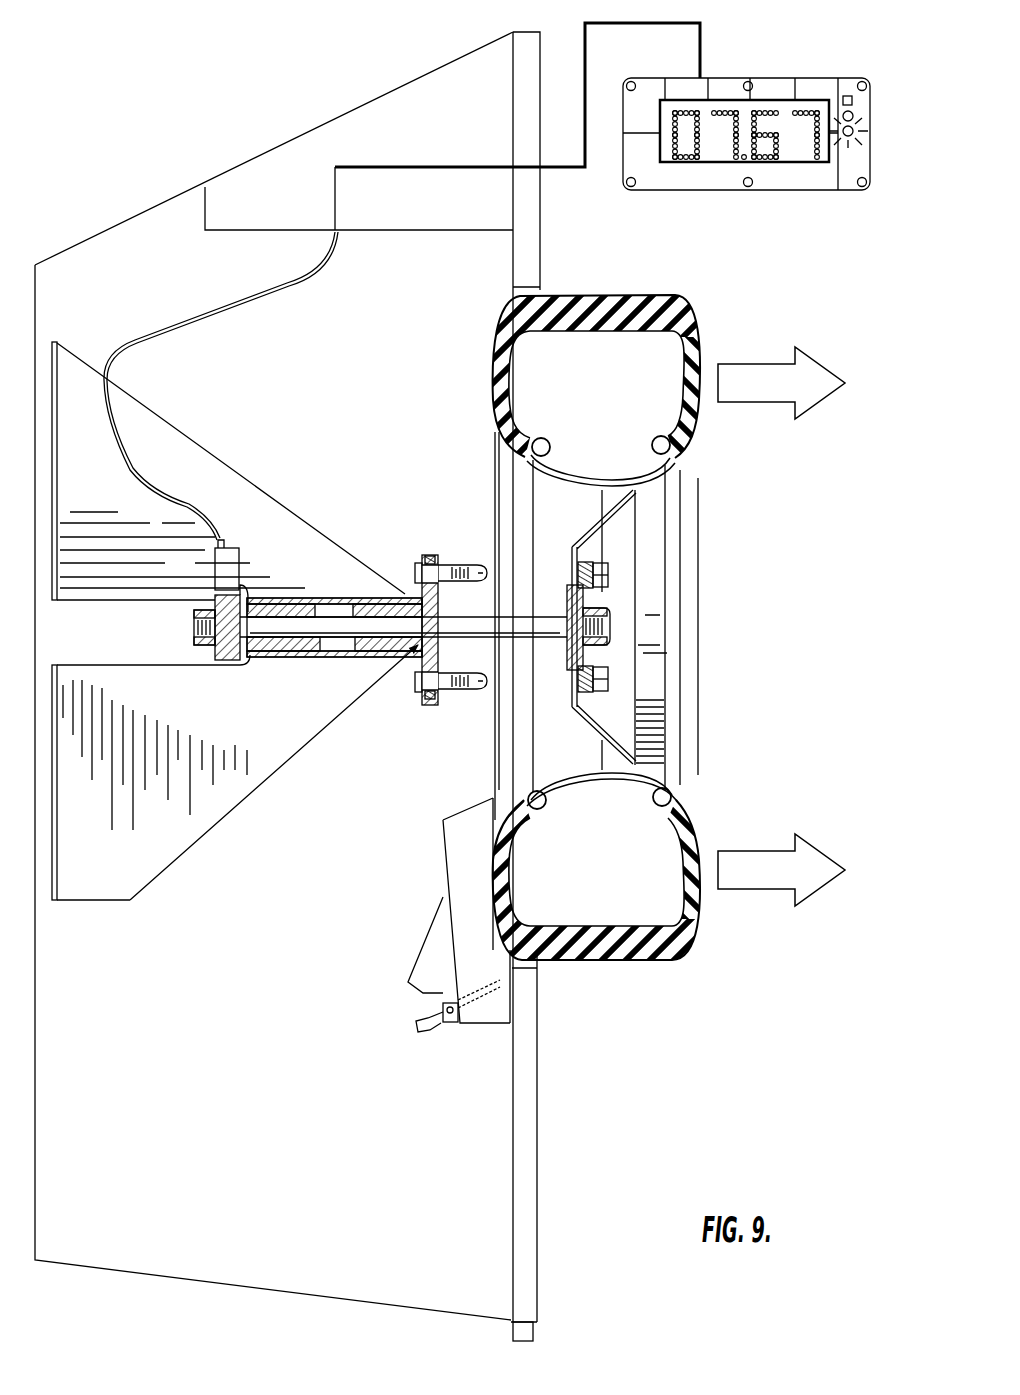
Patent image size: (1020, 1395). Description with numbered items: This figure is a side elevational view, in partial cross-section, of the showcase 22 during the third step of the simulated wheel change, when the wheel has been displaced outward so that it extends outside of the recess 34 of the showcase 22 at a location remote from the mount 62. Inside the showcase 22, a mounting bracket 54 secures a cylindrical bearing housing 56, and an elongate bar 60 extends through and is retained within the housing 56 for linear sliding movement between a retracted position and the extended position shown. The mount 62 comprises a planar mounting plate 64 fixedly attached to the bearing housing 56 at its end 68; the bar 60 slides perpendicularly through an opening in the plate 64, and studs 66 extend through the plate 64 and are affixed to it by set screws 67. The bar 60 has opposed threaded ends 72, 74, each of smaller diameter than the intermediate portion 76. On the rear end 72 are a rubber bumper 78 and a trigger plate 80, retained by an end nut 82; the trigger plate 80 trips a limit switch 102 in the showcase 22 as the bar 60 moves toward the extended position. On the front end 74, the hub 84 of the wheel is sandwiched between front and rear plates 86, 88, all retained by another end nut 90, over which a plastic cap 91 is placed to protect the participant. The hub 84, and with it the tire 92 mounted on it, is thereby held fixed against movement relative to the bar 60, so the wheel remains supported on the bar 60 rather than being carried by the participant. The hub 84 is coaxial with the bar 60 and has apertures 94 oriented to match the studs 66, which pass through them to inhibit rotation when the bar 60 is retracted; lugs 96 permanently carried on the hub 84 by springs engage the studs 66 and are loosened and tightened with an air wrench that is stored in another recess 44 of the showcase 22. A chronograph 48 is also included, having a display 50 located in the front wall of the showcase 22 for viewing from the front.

The showcase 22 is at (150, 160).
The recess 34 is at (545, 293).
The recess 44 is at (443, 872).
The chronograph 48 is at (773, 85).
The display 50 is at (703, 157).
The mounting bracket 54 is at (180, 470).
The cylindrical housing 56 is at (311, 658).
The elongate bar 60 is at (280, 627).
The mount 62 is at (407, 563).
The planar mounting plate 64 is at (440, 605).
The studs 66 is at (486, 568).
The set screws 67 is at (428, 555).
The end 68 is at (380, 658).
The rear threaded end 72 is at (193, 630).
The front threaded end 74 is at (613, 628).
The portion 76 is at (347, 625).
The rubber bumper 78 is at (270, 598).
The trigger plate 80 is at (232, 660).
The end nut 82 is at (200, 610).
The hub 84 is at (617, 507).
The front plate 86 is at (583, 600).
The rear plate 88 is at (593, 653).
The end nut 90 is at (586, 645).
The plastic cap 91 is at (613, 641).
The tire 92 is at (700, 345).
The apertures 94 is at (570, 680).
The lugs 96 is at (603, 573).
The limit switch 102 is at (222, 590).